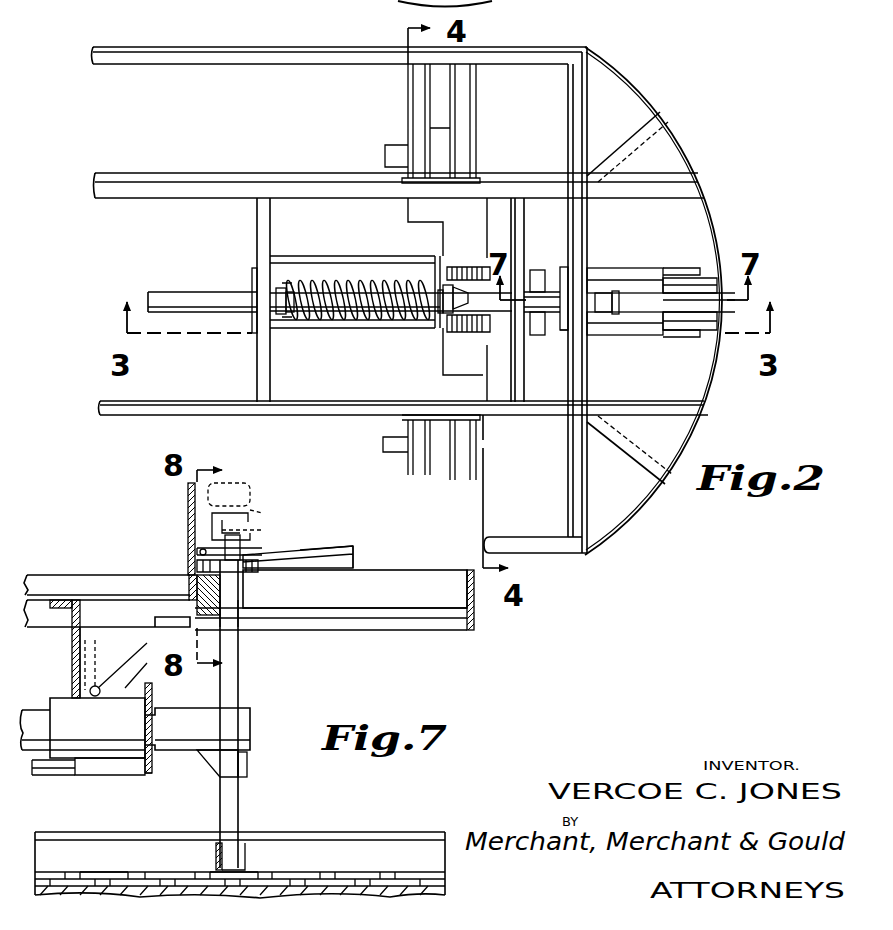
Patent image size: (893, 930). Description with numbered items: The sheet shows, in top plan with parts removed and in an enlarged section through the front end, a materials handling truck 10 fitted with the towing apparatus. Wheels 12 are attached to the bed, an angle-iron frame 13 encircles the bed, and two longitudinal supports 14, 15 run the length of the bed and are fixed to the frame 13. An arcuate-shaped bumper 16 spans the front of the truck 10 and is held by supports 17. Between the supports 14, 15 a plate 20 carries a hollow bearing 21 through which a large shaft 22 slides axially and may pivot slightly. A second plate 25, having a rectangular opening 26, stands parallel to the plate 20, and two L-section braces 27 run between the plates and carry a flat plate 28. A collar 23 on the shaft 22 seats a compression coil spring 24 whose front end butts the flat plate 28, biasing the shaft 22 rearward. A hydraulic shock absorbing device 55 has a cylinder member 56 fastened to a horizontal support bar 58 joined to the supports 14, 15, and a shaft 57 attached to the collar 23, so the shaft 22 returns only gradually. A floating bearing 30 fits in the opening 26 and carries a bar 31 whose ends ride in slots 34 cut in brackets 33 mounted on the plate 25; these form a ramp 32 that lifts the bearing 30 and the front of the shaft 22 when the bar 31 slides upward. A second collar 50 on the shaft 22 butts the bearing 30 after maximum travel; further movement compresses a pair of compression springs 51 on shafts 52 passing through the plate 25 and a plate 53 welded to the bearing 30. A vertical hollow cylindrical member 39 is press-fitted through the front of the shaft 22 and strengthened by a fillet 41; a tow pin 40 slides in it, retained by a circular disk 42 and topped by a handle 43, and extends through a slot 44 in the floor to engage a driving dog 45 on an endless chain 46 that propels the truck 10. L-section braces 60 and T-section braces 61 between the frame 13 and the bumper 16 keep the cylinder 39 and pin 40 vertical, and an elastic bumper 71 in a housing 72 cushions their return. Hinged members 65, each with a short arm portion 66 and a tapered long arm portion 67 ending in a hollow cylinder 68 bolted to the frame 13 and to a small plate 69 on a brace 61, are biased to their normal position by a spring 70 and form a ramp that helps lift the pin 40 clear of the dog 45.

In FIG. 2, the materials handling truck 10 is at (238, 38).
In FIG. 7, the materials handling truck 10 is at (52, 570).
In FIG. 2, the wheels 12 is at (395, 455).
In FIG. 2, the frame 13 is at (283, 47).
In FIG. 7, the frame 13 is at (93, 575).
In FIG. 2, the support 14 is at (178, 200).
In FIG. 7, the support 14 is at (112, 600).
In FIG. 2, the support 15 is at (162, 401).
In FIG. 2, the arcuate-shaped bumper 16 is at (690, 148).
In FIG. 7, the arcuate-shaped bumper 16 is at (476, 630).
In FIG. 2, the supports 17 is at (634, 418).
In FIG. 2, the plate 20 is at (255, 236).
In FIG. 2, the bearing 21 is at (252, 336).
In FIG. 2, the shaft 22 is at (158, 292).
In FIG. 7, the shaft 22 is at (250, 728).
In FIG. 2, the collar 23 is at (282, 288).
In FIG. 2, the compression coil spring 24 is at (362, 284).
In FIG. 2, the second plate 25 is at (516, 197).
In FIG. 7, the second plate 25 is at (74, 600).
In FIG. 7, the rectangular-shaped opening 26 is at (72, 680).
In FIG. 2, the braces 27 is at (368, 332).
In FIG. 7, the braces 27 is at (37, 776).
In FIG. 2, the flat plate 28 is at (437, 330).
In FIG. 7, the floating bearing 30 is at (55, 700).
In FIG. 2, the bar 31 is at (540, 292).
In FIG. 7, the bar 31 is at (97, 686).
In FIG. 2, the ramp 32 is at (566, 334).
In FIG. 7, the ramp 32 is at (150, 778).
In FIG. 2, the brackets 33 is at (534, 336).
In FIG. 7, the brackets 33 is at (118, 776).
In FIG. 7, the slot 34 is at (135, 690).
In FIG. 7, the hollow cylindrical member 39 is at (247, 762).
In FIG. 7, the tow pin 40 is at (242, 540).
In FIG. 7, the fillet 41 is at (210, 770).
In FIG. 2, the circular disk 42 is at (618, 314).
In FIG. 7, the circular disk 42 is at (197, 538).
In FIG. 2, the handle 43 is at (598, 314).
In FIG. 7, the handle 43 is at (250, 515).
In FIG. 7, the slot 44 is at (362, 832).
In FIG. 7, the driving dog 45 is at (216, 855).
In FIG. 7, the endless chain 46 is at (338, 872).
In FIG. 2, the second collar 50 is at (455, 288).
In FIG. 2, the compression springs 51 is at (470, 332).
In FIG. 2, the shafts 52 is at (470, 267).
In FIG. 2, the plate 53 is at (566, 270).
In FIG. 7, the plate 53 is at (152, 698).
In FIG. 2, the hydraulic shock absorbing device 55 is at (450, 318).
In FIG. 2, the cylinder member 56 is at (342, 271).
In FIG. 2, the shaft 57 is at (300, 318).
In FIG. 2, the horizontal support bar 58 is at (488, 208).
In FIG. 7, the horizontal support bar 58 is at (35, 595).
In FIG. 2, the braces 60 is at (718, 292).
In FIG. 7, the braces 60 is at (404, 578).
In FIG. 2, the braces 61 is at (707, 338).
In FIG. 7, the braces 61 is at (366, 622).
In FIG. 2, the members 65 is at (654, 336).
In FIG. 7, the members 65 is at (327, 546).
In FIG. 7, the short arm portion 66 is at (305, 548).
In FIG. 7, the long arm portion 67 is at (358, 556).
In FIG. 2, the hollow cylinder 68 is at (654, 278).
In FIG. 2, the small plate 69 is at (672, 327).
In FIG. 7, the spring 70 is at (197, 548).
In FIG. 7, the bumper 71 is at (228, 592).
In FIG. 7, the housing 72 is at (192, 582).